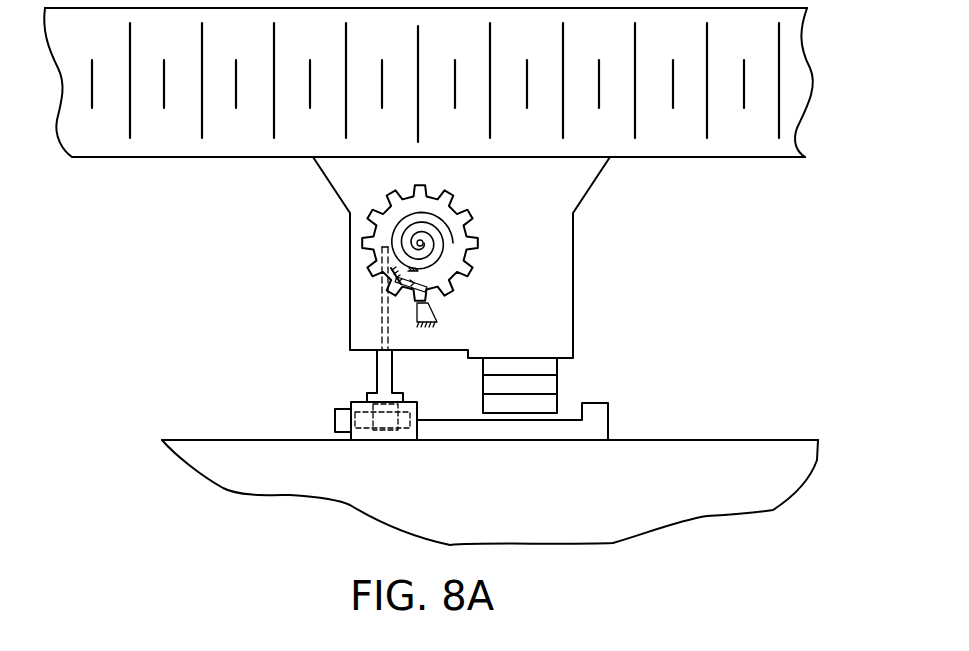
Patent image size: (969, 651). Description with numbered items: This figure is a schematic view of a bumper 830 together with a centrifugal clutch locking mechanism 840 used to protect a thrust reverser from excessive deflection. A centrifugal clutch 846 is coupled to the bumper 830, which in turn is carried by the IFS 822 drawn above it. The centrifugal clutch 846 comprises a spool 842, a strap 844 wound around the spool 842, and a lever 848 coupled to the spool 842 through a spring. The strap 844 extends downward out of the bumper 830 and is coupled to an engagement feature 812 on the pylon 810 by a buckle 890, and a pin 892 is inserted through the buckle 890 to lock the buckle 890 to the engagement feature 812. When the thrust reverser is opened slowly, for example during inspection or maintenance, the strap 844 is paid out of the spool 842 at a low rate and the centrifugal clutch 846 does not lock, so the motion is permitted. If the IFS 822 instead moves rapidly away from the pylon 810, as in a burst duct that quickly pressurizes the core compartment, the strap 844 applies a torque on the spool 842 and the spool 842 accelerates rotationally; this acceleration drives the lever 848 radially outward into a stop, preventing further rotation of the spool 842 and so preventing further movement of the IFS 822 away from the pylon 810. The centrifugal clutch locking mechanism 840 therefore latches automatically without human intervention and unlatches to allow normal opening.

The pylon 810 is at (705, 517).
The engagement feature 812 is at (608, 425).
The IFS 822 is at (722, 157).
The bumper 830 is at (573, 318).
The centrifugal clutch locking mechanism 840 is at (276, 286).
The spool 842 is at (365, 243).
The strap 844 is at (382, 295).
The centrifugal clutch 846 is at (487, 222).
The lever 848 is at (427, 290).
The buckle 890 is at (377, 380).
The pin 892 is at (335, 422).